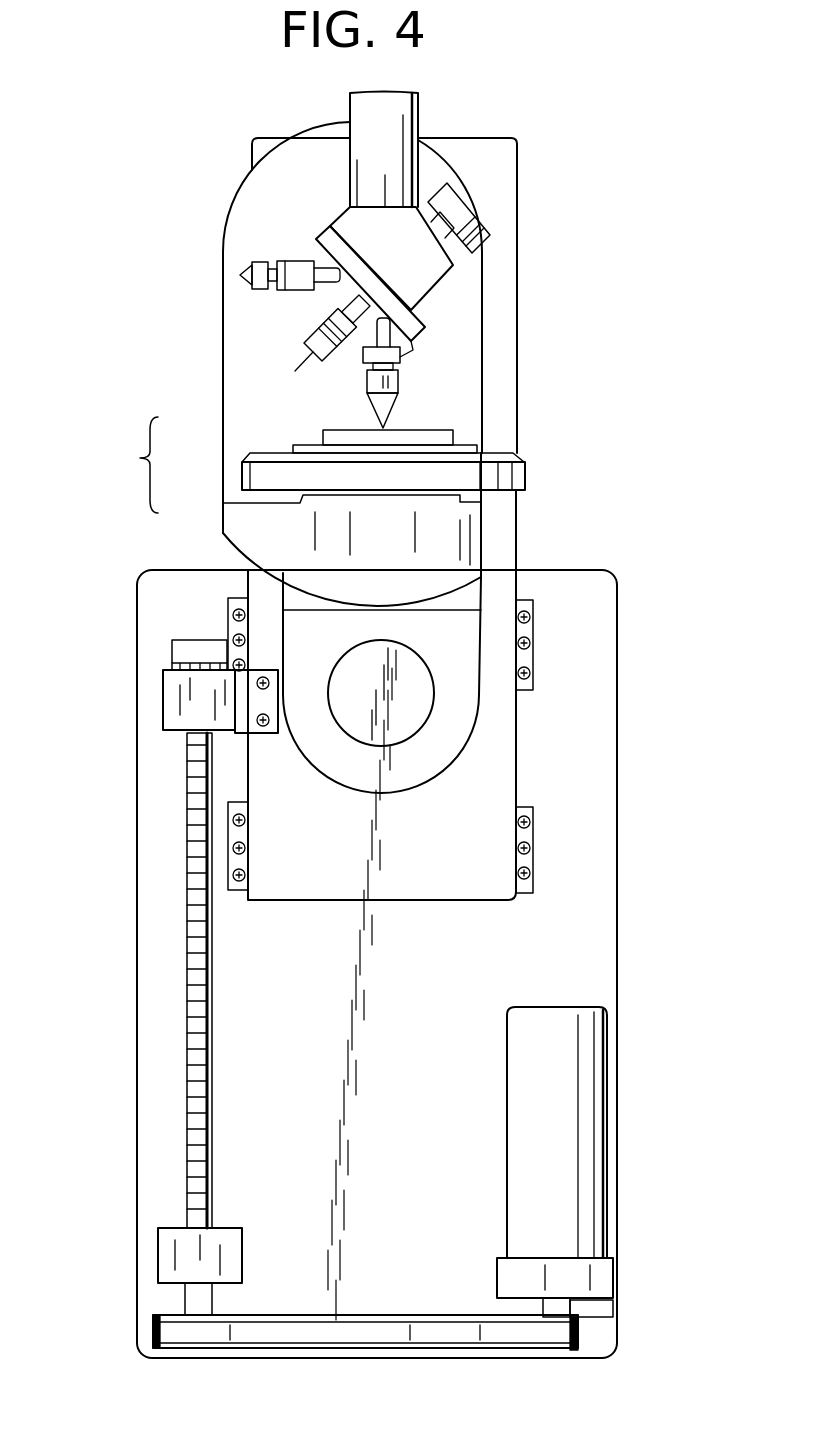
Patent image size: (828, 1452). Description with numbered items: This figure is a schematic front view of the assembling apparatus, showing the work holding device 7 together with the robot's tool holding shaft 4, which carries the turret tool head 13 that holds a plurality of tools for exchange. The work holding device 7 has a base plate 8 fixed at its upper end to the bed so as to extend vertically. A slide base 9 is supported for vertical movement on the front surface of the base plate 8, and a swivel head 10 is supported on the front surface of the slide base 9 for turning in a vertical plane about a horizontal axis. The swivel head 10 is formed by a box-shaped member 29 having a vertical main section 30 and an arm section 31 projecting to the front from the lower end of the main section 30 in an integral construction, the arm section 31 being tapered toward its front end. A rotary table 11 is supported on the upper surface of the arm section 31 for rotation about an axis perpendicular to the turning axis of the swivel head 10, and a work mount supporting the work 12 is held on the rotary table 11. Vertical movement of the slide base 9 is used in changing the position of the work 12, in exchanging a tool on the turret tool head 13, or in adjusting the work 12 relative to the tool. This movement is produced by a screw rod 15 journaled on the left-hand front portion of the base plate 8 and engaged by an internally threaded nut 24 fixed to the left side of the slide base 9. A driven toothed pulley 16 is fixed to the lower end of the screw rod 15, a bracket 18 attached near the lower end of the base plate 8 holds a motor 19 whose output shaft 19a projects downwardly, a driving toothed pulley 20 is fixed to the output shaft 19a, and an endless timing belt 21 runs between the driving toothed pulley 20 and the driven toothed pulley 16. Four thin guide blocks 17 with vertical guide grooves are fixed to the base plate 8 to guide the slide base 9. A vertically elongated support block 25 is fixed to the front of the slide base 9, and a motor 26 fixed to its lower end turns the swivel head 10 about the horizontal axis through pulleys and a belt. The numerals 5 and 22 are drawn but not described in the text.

The tool holding shaft 4 is at (420, 112).
The mirror block 5 is at (437, 287).
The work holding device 7 is at (618, 893).
The base plate 8 is at (618, 800).
The slide base 9 is at (517, 182).
The swivel head 10 is at (482, 535).
The rotary table 11 is at (525, 473).
The work 12 is at (433, 428).
The turret tool head 13 is at (413, 357).
The screw rod 15 is at (187, 950).
The driven toothed pulley 16 is at (167, 1313).
The thin guide blocks 17 is at (235, 625).
The bracket 18 is at (600, 1268).
The motor 19 is at (598, 1077).
The output shaft 19a is at (570, 1308).
The driving toothed pulley 20 is at (577, 1352).
The endless timing belt 21 is at (388, 1320).
The slide block 22 is at (500, 758).
The internally threaded block or nut 24 is at (170, 712).
The support block 25 is at (478, 720).
The motor 26 is at (383, 747).
The box-shaped member 29 is at (130, 465).
The main section 30 is at (223, 447).
The arm section 31 is at (223, 520).